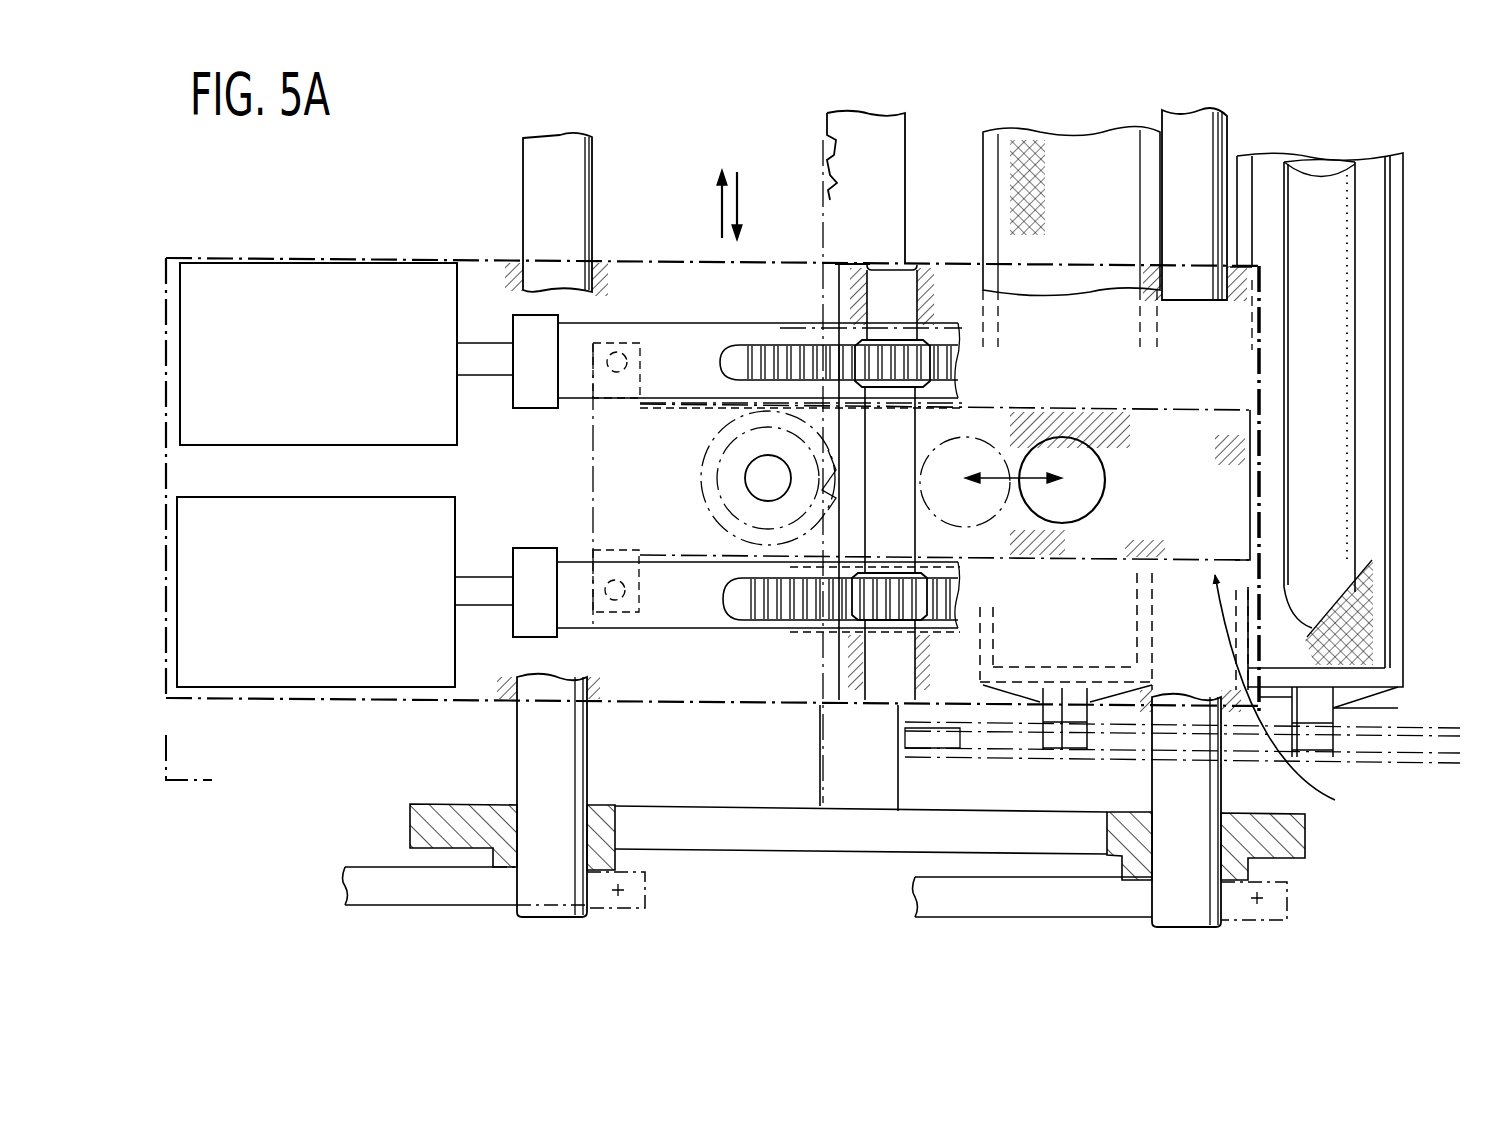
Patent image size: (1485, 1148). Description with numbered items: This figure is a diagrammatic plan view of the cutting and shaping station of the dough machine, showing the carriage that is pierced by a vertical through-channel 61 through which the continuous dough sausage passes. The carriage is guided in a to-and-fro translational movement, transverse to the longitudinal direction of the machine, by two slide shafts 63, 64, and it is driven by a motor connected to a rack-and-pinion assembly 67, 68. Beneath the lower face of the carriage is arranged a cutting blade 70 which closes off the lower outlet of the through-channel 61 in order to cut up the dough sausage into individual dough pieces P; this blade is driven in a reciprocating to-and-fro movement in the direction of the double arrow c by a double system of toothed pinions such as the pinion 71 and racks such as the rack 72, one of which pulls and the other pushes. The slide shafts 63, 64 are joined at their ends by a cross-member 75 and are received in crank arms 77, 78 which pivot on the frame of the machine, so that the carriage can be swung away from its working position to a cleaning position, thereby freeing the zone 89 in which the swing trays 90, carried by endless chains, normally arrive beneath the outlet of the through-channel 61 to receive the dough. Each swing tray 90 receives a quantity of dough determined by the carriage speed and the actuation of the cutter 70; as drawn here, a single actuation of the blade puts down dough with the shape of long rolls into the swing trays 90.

The slide shaft 63 is at (532, 178).
The rack-and-pinion assembly 68 is at (827, 143).
The slide shaft 64 is at (1215, 147).
The dough pieces P is at (1340, 180).
The double arrow c is at (718, 200).
The cutting blade 70 is at (1150, 415).
The rack-and-pinion assembly 67 is at (723, 455).
The through-channel 61 is at (1085, 470).
The rack 72 is at (768, 622).
The toothed pinion 71 is at (880, 600).
The swing tray 90 is at (1153, 633).
The zone 89 is at (1293, 696).
The cross-member 75 is at (800, 850).
The crank arm 77 is at (450, 905).
The crank arm 78 is at (1022, 905).